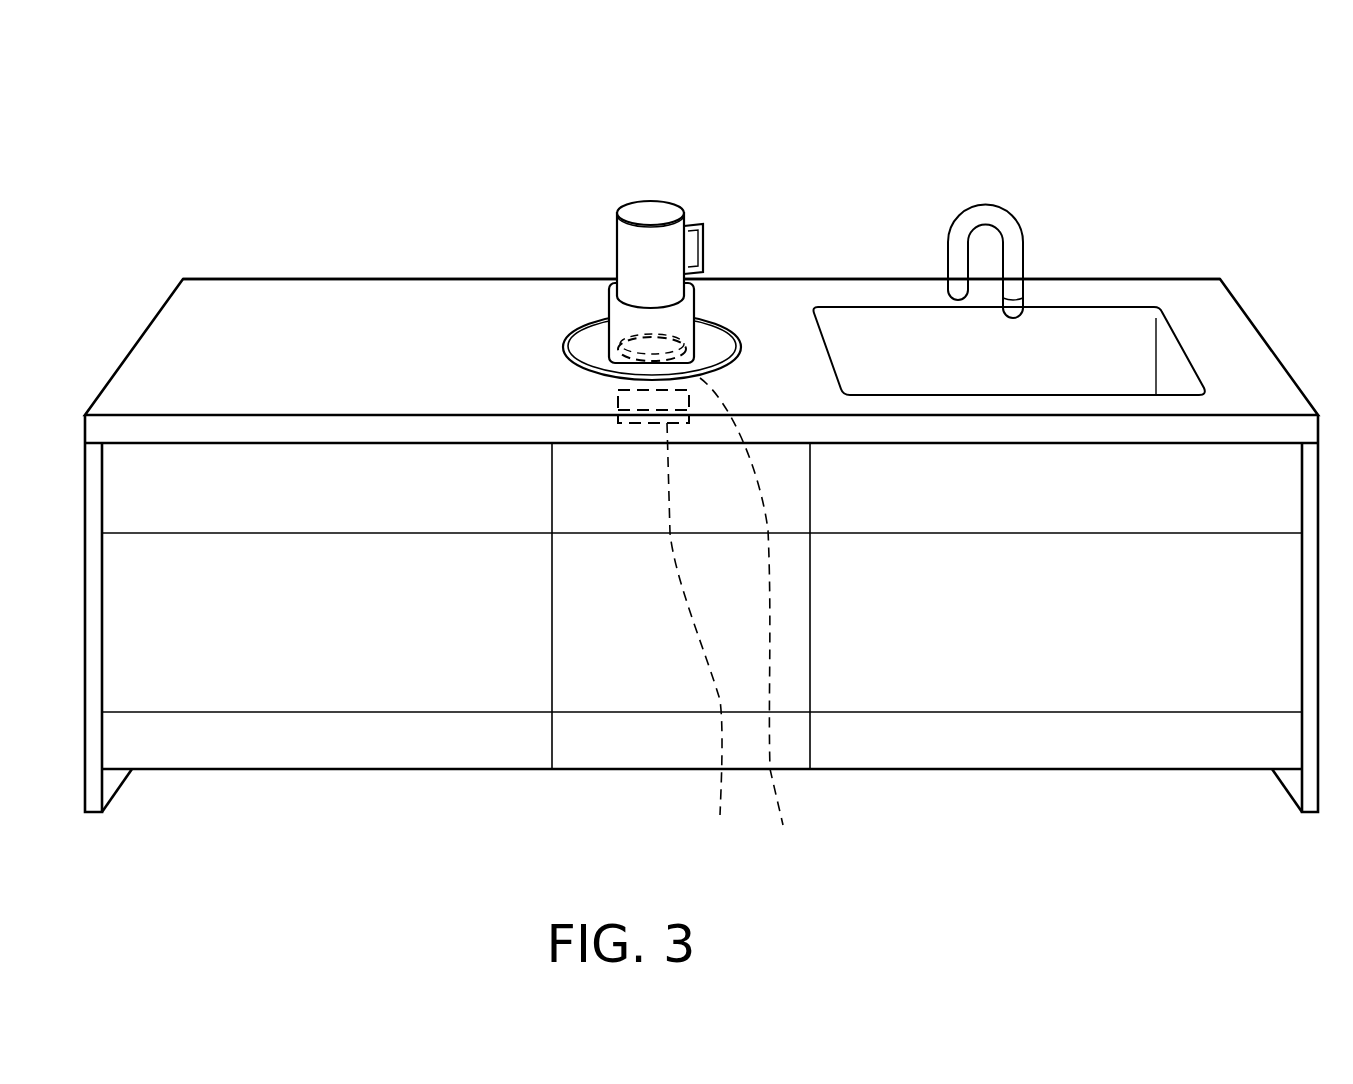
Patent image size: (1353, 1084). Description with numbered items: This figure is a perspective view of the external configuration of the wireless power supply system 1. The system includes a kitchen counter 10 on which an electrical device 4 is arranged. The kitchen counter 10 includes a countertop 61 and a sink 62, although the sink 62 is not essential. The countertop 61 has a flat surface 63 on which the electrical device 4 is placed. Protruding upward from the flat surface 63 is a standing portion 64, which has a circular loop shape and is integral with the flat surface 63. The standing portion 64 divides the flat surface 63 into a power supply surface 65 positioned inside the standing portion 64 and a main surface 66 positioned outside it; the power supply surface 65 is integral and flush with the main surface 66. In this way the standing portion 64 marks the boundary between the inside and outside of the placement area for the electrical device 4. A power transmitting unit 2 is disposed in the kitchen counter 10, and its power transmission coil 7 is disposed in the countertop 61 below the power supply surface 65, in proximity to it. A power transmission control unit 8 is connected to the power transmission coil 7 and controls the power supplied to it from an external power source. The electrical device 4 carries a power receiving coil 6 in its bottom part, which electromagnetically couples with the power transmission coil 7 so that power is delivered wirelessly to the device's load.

The wireless power supply system 1 is at (357, 135).
The kitchen counter 10 is at (260, 250).
The countertop 61 is at (477, 252).
The sink 62 is at (1106, 325).
The flat surface 63 is at (402, 325).
The standing portion 64 is at (740, 338).
The power supply surface 65 is at (708, 337).
The main surface 66 is at (537, 306).
The electrical device 4 is at (655, 215).
The power receiving coil 6 is at (647, 340).
The power transmitting unit 2 is at (626, 432).
The power transmission coil 7 is at (746, 622).
The power transmission control unit 8 is at (694, 636).